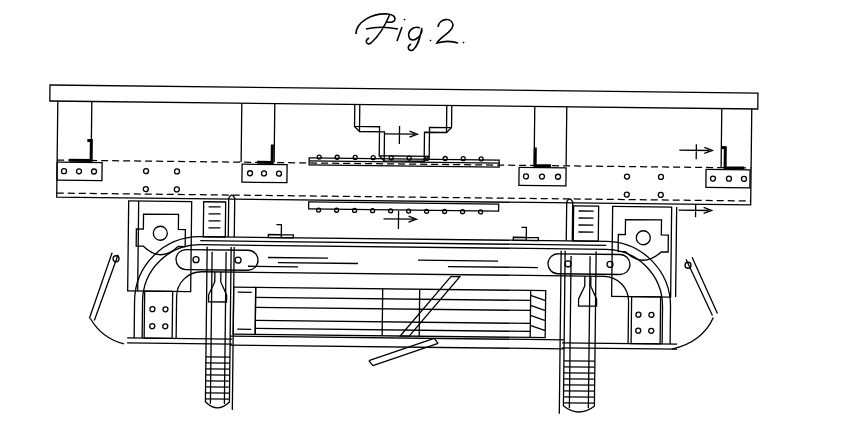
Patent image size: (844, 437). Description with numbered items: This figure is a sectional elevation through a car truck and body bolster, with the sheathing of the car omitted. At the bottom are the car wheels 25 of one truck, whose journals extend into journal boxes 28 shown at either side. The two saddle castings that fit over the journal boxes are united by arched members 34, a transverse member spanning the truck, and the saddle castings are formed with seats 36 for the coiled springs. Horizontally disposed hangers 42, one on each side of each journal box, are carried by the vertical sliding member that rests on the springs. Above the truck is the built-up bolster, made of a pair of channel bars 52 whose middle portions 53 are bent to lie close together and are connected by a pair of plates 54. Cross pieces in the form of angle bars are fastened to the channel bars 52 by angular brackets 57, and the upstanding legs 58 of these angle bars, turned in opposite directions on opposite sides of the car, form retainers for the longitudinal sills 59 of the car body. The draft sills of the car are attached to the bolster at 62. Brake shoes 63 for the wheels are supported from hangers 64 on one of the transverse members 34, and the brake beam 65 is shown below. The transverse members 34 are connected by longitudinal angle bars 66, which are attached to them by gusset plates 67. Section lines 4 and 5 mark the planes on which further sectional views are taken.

The section line 4- 4 is at (400, 175).
The section line 5- 5 is at (695, 176).
The car wheels 25 is at (214, 404).
The journal boxes 28 is at (110, 328).
The arched members 34 is at (344, 258).
The seats 36 is at (144, 343).
The hangers 42 is at (162, 232).
The channel bars 52 is at (82, 197).
The middle portions 53 is at (478, 207).
The plates 54 is at (427, 163).
The angular brackets 57 is at (58, 175).
The upstanding legs 58 is at (88, 150).
The longitudinal sills 59 is at (60, 125).
The draft sill attachment 62 is at (438, 123).
The brake shoes 63 is at (220, 350).
The hangers 64 is at (205, 340).
The brake beam 65 is at (402, 350).
The longitudinal angle bars 66 is at (285, 232).
The gusset plates 67 is at (268, 235).